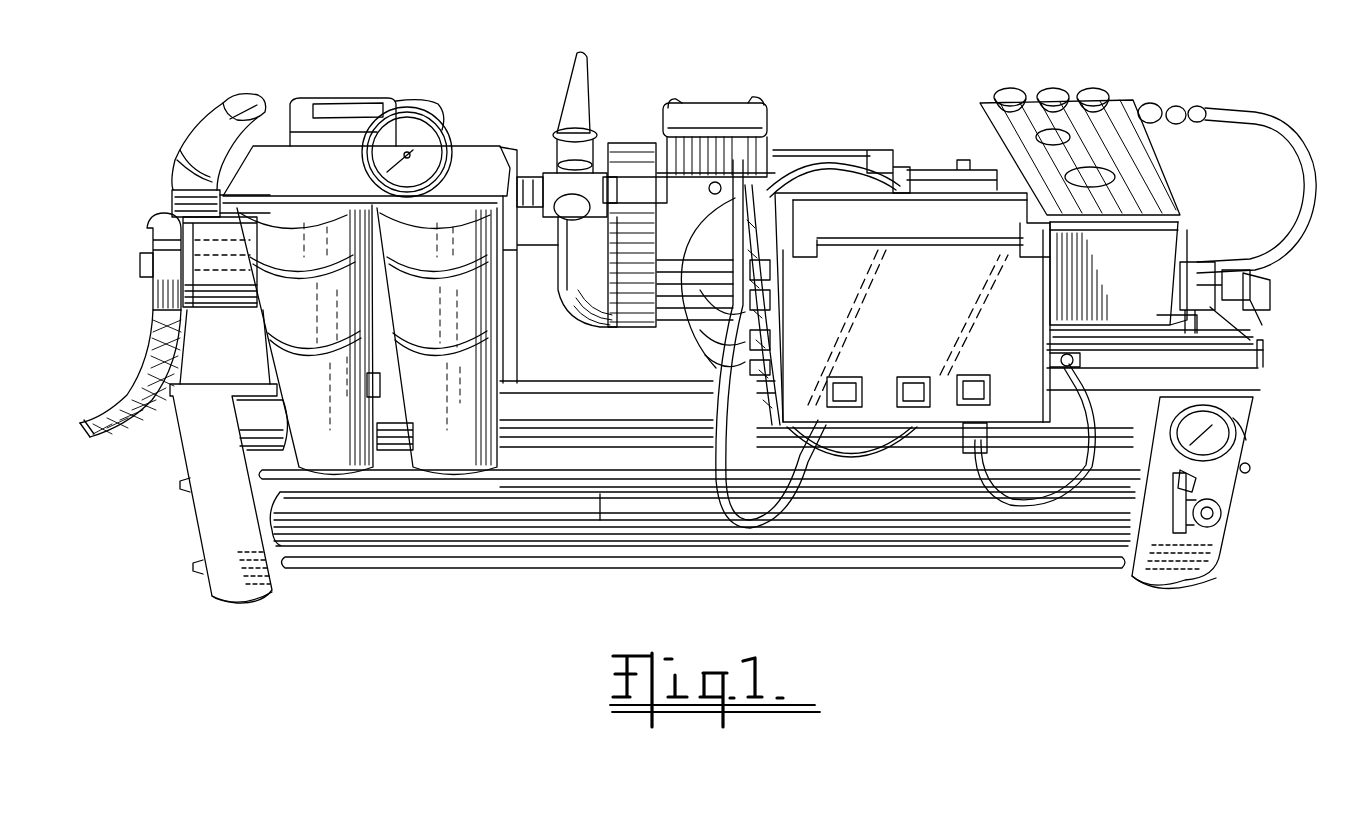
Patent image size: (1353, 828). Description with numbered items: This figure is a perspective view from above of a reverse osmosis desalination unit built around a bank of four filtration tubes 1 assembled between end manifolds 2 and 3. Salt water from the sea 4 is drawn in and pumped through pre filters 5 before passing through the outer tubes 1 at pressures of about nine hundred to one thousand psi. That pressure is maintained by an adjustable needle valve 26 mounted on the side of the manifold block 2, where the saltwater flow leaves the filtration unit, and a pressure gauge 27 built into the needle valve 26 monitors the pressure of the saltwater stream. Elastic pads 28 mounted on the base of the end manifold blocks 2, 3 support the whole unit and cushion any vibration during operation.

The tube 1 is at (604, 497).
The end manifold 2 is at (1163, 531).
The end manifold 3 is at (207, 505).
The salt water from the sea 4 is at (112, 405).
The pre filter 5 is at (310, 415).
The adjustable needle valve 26 is at (1230, 503).
The pressure gauge 27 is at (1237, 412).
The elastic pad 28 is at (276, 598).